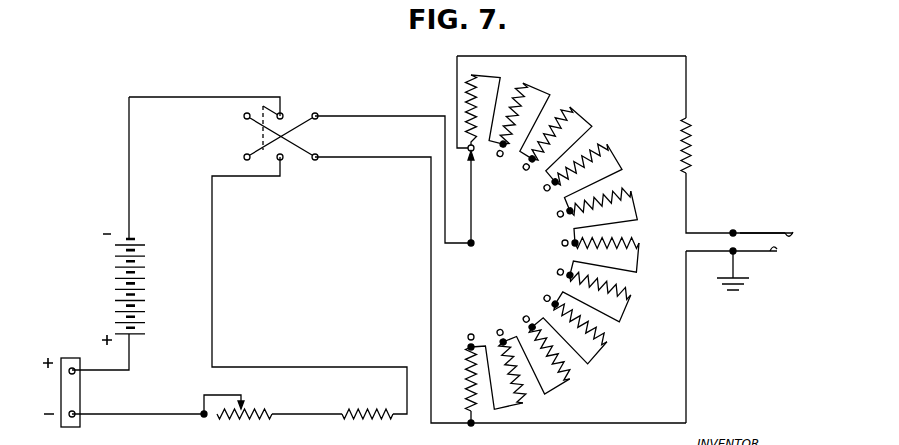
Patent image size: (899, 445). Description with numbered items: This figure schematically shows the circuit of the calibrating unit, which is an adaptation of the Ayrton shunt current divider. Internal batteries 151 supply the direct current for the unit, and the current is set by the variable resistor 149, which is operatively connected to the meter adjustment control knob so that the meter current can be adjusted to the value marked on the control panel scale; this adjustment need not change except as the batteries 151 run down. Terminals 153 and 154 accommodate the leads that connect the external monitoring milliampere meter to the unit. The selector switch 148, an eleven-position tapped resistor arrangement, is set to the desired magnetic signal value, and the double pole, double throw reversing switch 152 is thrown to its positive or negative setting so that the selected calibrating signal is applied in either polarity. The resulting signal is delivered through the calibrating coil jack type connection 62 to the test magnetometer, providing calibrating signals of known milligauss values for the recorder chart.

The calibrating coil jack type connection 62 is at (760, 233).
The selector switch 148 is at (590, 119).
The variable resistor 149 is at (249, 412).
The internal batteries 151 is at (145, 247).
The double pole, double throw reversing switch 152 is at (282, 113).
The terminal 153 is at (74, 373).
The terminal 154 is at (74, 416).